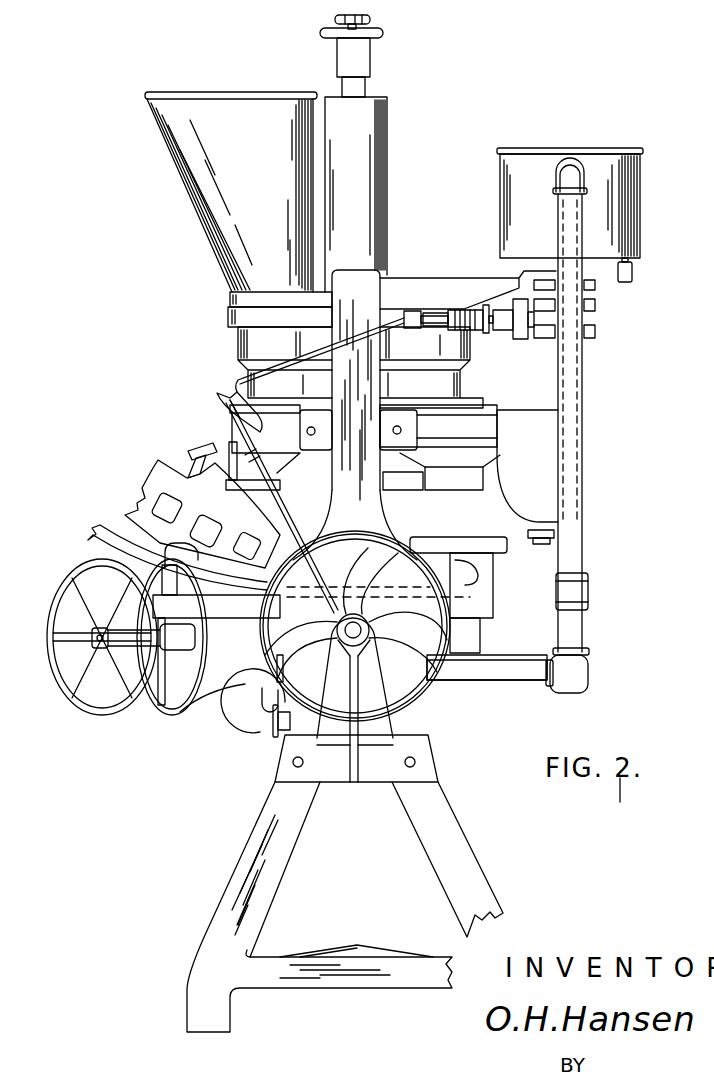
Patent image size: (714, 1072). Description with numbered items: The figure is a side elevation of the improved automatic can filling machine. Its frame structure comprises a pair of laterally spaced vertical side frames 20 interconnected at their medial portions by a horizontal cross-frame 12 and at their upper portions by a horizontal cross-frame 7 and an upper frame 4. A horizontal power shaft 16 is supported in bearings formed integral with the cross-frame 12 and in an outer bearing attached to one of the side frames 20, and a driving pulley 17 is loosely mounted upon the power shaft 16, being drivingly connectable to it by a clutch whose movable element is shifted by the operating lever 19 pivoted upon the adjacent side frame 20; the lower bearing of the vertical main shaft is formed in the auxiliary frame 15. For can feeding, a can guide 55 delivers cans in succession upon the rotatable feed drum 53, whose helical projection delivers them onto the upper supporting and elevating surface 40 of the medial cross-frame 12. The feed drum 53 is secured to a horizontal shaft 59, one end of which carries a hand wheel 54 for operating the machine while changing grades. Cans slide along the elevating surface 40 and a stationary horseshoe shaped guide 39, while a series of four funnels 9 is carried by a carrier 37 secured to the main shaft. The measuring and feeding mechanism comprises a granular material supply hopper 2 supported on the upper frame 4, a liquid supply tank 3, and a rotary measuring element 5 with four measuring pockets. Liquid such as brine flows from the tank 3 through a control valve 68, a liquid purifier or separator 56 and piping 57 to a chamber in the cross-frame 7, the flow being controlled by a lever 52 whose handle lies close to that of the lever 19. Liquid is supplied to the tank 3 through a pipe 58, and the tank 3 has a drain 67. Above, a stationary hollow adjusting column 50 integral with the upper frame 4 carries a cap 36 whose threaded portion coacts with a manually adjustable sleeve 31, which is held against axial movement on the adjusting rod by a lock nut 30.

The granular material supply hopper 2 is at (210, 196).
The liquid supply tank 3 is at (515, 199).
The upper frame 4 is at (228, 314).
The measuring element 5 is at (240, 354).
The horizontal cross-frame 7 is at (274, 432).
The funnels 9 is at (255, 486).
The horizontal cross-frame 12 is at (484, 603).
The auxiliary frame 15 is at (470, 641).
The horizontal power shaft 16 is at (345, 633).
The driving pulley 17 is at (383, 543).
The operating lever 19 is at (280, 501).
The side frames 20 is at (442, 858).
The lock nut 30 is at (335, 19).
The manually adjustable sleeve 31 is at (383, 35).
The cap 36 is at (360, 89).
The carrier 37 is at (395, 482).
The horseshoe shaped guide 39 is at (440, 538).
The elevating surface 40 is at (373, 586).
The adjusting column 50 is at (365, 200).
The lever 52 is at (288, 364).
The feed drum 53 is at (208, 637).
The hand wheel 54 is at (76, 575).
The can guide 55 is at (155, 483).
The liquid purifier or separator 56 is at (527, 477).
The piping 57 is at (462, 437).
The pipe 58 is at (576, 511).
The horizontal shaft 59 is at (95, 646).
The drain 67 is at (631, 273).
The control valve 68 is at (507, 320).